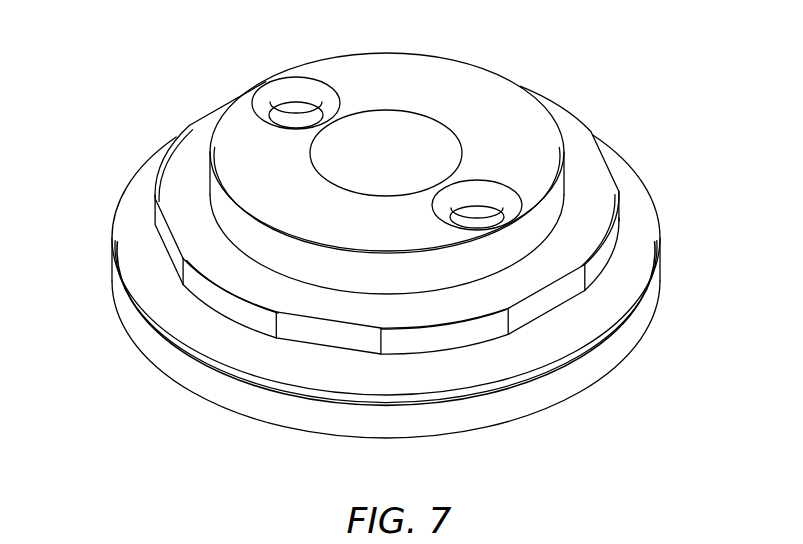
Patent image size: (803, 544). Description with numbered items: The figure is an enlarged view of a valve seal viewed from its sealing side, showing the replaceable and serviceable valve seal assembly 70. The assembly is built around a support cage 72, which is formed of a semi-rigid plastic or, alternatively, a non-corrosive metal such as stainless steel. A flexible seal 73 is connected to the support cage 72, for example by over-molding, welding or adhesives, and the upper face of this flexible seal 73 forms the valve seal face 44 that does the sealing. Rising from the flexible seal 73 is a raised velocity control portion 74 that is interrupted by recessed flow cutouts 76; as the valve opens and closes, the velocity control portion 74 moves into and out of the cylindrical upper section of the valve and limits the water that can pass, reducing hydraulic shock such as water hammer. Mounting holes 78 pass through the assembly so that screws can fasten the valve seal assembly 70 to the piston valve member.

The valve seal assembly 70 is at (690, 95).
The support cage 72 is at (617, 350).
The flexible seal 73 is at (313, 357).
The valve seal face 44 is at (388, 203).
The raised velocity control portion 74 is at (198, 276).
The recessed flow cutouts 76 is at (167, 227).
The mounting holes 78 is at (275, 93).